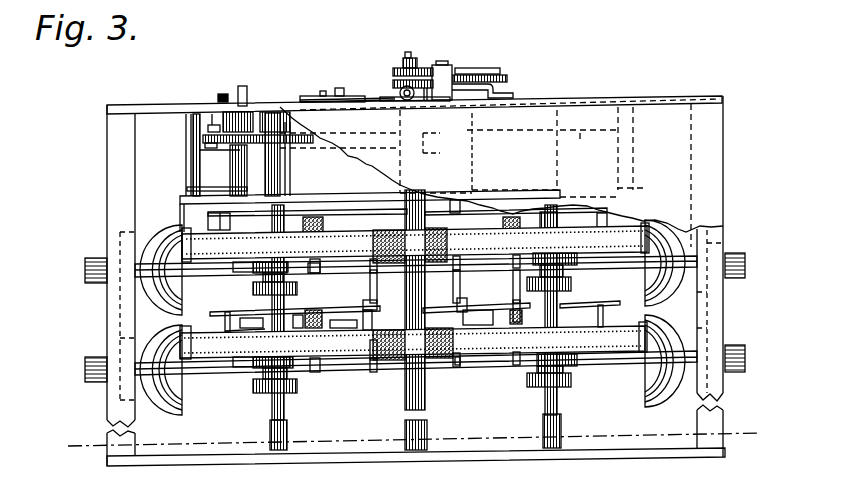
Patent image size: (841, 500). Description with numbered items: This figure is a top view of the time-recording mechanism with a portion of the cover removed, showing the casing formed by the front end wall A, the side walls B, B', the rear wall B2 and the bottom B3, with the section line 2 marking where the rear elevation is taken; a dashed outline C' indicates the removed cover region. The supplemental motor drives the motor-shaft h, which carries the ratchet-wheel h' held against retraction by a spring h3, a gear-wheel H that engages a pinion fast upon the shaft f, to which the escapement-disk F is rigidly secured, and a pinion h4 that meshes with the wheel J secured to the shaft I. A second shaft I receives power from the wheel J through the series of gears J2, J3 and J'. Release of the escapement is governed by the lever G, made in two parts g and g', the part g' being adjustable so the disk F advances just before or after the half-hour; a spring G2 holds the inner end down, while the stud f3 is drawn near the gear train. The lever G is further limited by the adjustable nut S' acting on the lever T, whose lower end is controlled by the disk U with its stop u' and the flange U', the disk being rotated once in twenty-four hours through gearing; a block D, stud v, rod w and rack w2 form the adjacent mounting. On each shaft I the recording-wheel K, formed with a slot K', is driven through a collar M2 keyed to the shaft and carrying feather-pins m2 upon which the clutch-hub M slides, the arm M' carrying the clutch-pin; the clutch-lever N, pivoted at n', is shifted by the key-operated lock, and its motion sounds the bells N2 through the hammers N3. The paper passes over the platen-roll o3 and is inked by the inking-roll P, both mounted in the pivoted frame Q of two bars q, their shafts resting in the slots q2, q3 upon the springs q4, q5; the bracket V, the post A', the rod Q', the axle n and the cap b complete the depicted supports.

The front end wall A is at (411, 95).
The side wall B is at (239, 285).
The side wall B' is at (724, 276).
The rear wall B2 is at (640, 482).
The bottom B3 is at (347, 195).
The section line 2 is at (417, 438).
The cam plate C' is at (510, 160).
The wheel J is at (376, 151).
The gear J2 is at (447, 153).
The gear J3 is at (513, 150).
The gear J' is at (601, 152).
The escapement-disk F is at (205, 118).
The ratchet-wheel h' is at (264, 154).
The motor-shaft h is at (228, 170).
The gear-wheel H is at (203, 143).
The pinion h4 is at (282, 137).
The stud f3 is at (208, 125).
The spring h3 is at (207, 150).
The shaft f is at (230, 190).
The spring G2 is at (220, 95).
The lever part g is at (249, 84).
The lever G is at (252, 106).
The adjustable lever part g' is at (349, 85).
The adjustable nut S' is at (391, 108).
The rack w2 is at (413, 100).
The rod w is at (425, 101).
The block D is at (412, 56).
The stud v is at (411, 53).
The lever T is at (446, 62).
The flange U' is at (477, 55).
The disk U is at (487, 65).
The stop u' is at (489, 85).
The inking-roll P is at (397, 322).
The shaft I is at (283, 176).
The clutch-hub M is at (407, 218).
The bracket V is at (209, 223).
The post A' is at (161, 217).
The clutch arm M' is at (455, 222).
The slot K' is at (415, 256).
The recording-wheel K is at (413, 358).
The pivot n' is at (416, 325).
The lower axle n is at (416, 373).
The feather-pin m2 is at (253, 290).
The collar M2 is at (297, 289).
The pivoted frame Q is at (386, 309).
The rod Q' is at (590, 314).
The slot q3 is at (368, 302).
The spring q5 is at (475, 297).
The slot q2 is at (517, 303).
The spring q4 is at (251, 321).
The main bar q is at (296, 323).
The platen-roll o3 is at (318, 312).
The cap b is at (460, 362).
The clutch-lever N is at (172, 267).
The bell N2 is at (140, 295).
The hammer N3 is at (127, 283).